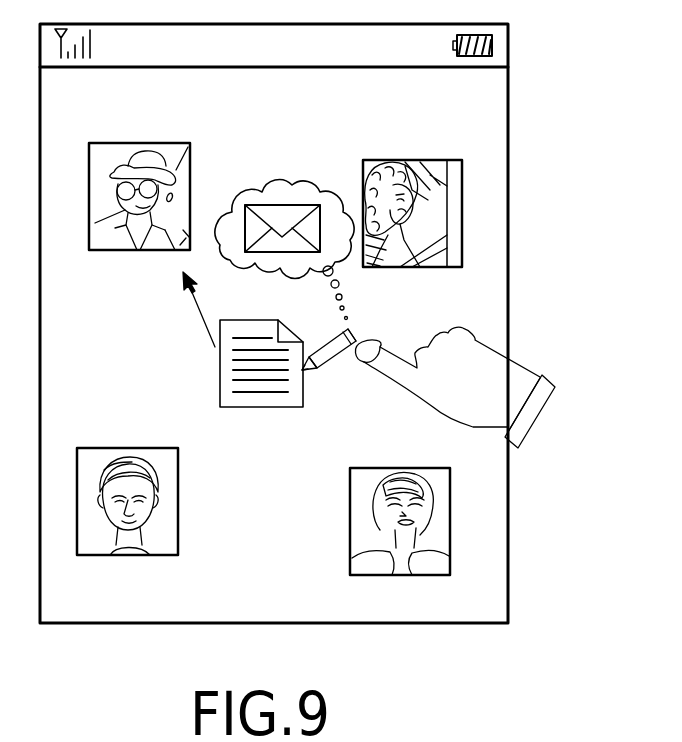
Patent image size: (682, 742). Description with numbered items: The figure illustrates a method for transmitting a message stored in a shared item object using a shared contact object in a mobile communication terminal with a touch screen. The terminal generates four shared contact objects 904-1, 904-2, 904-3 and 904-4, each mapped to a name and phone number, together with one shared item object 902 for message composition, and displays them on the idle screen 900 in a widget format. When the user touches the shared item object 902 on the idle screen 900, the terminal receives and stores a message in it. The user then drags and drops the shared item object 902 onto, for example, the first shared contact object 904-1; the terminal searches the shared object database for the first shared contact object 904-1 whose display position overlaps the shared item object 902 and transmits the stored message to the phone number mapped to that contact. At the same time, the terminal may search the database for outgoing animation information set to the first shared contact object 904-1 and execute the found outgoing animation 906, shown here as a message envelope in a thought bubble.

The idle screen 900 is at (510, 320).
The SIO 902 is at (220, 367).
The SCO_1 904-1 is at (166, 130).
The SCO_2 904-2 is at (440, 146).
The SCO_3 904-3 is at (150, 434).
The SCO_4 904-4 is at (422, 454).
The outgoing animation 906 is at (285, 182).